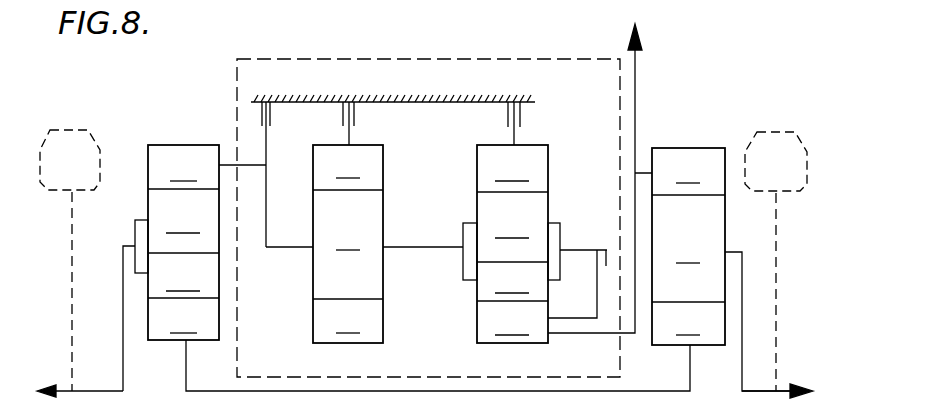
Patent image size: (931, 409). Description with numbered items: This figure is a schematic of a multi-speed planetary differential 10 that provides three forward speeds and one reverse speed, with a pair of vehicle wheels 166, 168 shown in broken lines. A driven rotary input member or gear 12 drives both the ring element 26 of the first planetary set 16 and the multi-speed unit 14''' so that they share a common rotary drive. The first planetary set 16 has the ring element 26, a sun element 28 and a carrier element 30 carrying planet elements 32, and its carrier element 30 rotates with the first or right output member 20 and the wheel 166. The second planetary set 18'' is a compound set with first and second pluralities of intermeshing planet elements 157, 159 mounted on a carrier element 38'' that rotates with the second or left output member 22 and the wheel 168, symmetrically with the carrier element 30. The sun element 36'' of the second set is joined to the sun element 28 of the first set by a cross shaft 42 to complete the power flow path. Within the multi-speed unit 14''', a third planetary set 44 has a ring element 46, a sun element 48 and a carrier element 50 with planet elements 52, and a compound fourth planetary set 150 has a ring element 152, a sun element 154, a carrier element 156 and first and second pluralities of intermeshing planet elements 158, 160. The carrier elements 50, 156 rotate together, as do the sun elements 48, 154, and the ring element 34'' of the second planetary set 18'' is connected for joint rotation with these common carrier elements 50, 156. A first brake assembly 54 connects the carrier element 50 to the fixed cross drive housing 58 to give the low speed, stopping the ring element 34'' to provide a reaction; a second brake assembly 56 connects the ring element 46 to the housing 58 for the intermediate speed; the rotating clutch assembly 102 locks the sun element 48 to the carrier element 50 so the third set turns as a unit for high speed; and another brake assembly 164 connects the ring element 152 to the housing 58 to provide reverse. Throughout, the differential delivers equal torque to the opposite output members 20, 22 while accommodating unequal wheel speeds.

The multi-speed planetary differential 10 is at (110, 92).
The driven rotary input member or gear 12 is at (636, 92).
The multi-speed unit 14''' is at (428, 193).
The first planetary set 16 is at (688, 223).
The second planetary set 18'' is at (173, 220).
The first output member 20 is at (784, 390).
The second output member 22 is at (105, 390).
The ring element 26 is at (688, 177).
The sun element 28 is at (687, 323).
The carrier element 30 is at (730, 250).
The planet elements 32 is at (688, 270).
The ring element 34'' is at (183, 173).
The sun element 36'' is at (183, 321).
The carrier element 38'' is at (126, 289).
The cross shaft 42 is at (566, 390).
The third planetary set 44 is at (322, 257).
The ring element 46 is at (348, 172).
The sun element 48 is at (317, 345).
The carrier element 50 is at (290, 246).
The planet elements 52 is at (348, 262).
The first brake assembly 54 is at (259, 111).
The second brake assembly 56 is at (357, 115).
The cross drive housing 58 is at (455, 99).
The rotating clutch assembly 102 is at (603, 248).
The compound fourth planetary set 150 is at (489, 257).
The ring element 152 is at (512, 175).
The sun element 154 is at (480, 345).
The carrier element 156 is at (556, 222).
The first plurality of intermeshing planet elements 157 is at (183, 231).
The first plurality of intermeshing planet elements 158 is at (512, 238).
The second plurality of intermeshing planet elements 159 is at (183, 283).
The second plurality of intermeshing planet elements 160 is at (512, 285).
The brake assembly 164 is at (523, 117).
The vehicle wheel 166 is at (775, 130).
The vehicle wheel 168 is at (91, 126).